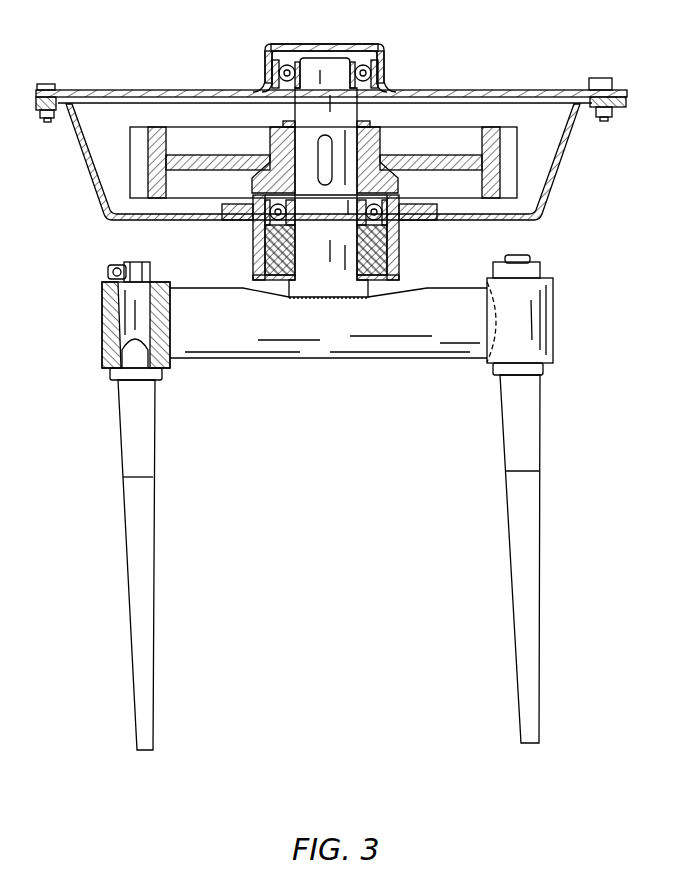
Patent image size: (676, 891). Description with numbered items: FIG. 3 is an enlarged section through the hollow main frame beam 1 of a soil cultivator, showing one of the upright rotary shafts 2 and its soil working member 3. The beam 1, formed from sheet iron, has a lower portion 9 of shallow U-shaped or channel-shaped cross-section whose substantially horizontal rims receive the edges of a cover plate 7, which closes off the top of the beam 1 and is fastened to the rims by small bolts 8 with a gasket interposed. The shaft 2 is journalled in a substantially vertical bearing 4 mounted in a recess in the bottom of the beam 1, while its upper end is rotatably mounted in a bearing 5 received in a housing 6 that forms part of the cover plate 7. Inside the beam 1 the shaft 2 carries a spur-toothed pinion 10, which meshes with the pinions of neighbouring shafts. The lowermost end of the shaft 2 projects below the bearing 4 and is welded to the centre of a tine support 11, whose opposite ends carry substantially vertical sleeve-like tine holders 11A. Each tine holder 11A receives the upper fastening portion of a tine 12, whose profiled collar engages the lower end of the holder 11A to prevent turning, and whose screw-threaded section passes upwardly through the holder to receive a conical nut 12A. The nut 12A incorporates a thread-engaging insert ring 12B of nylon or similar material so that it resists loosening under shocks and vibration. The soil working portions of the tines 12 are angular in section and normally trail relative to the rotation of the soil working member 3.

The hollow main frame beam 1 is at (111, 89).
The upright rotary shaft 2 is at (330, 222).
The soil working member 3 is at (308, 364).
The bearing 4 is at (387, 262).
The bearing 5 is at (290, 60).
The housing 6 is at (382, 62).
The cover plate 7 is at (486, 91).
The bolts 8 is at (610, 86).
The lower portion of the beam 9 is at (100, 192).
The spur-toothed pinion 10 is at (515, 185).
The tine support 11 is at (436, 360).
The tine holder 11A is at (102, 343).
The tine 12 is at (150, 640).
The conical nut 12A is at (152, 272).
The thread-engaging insert ring 12B is at (108, 270).